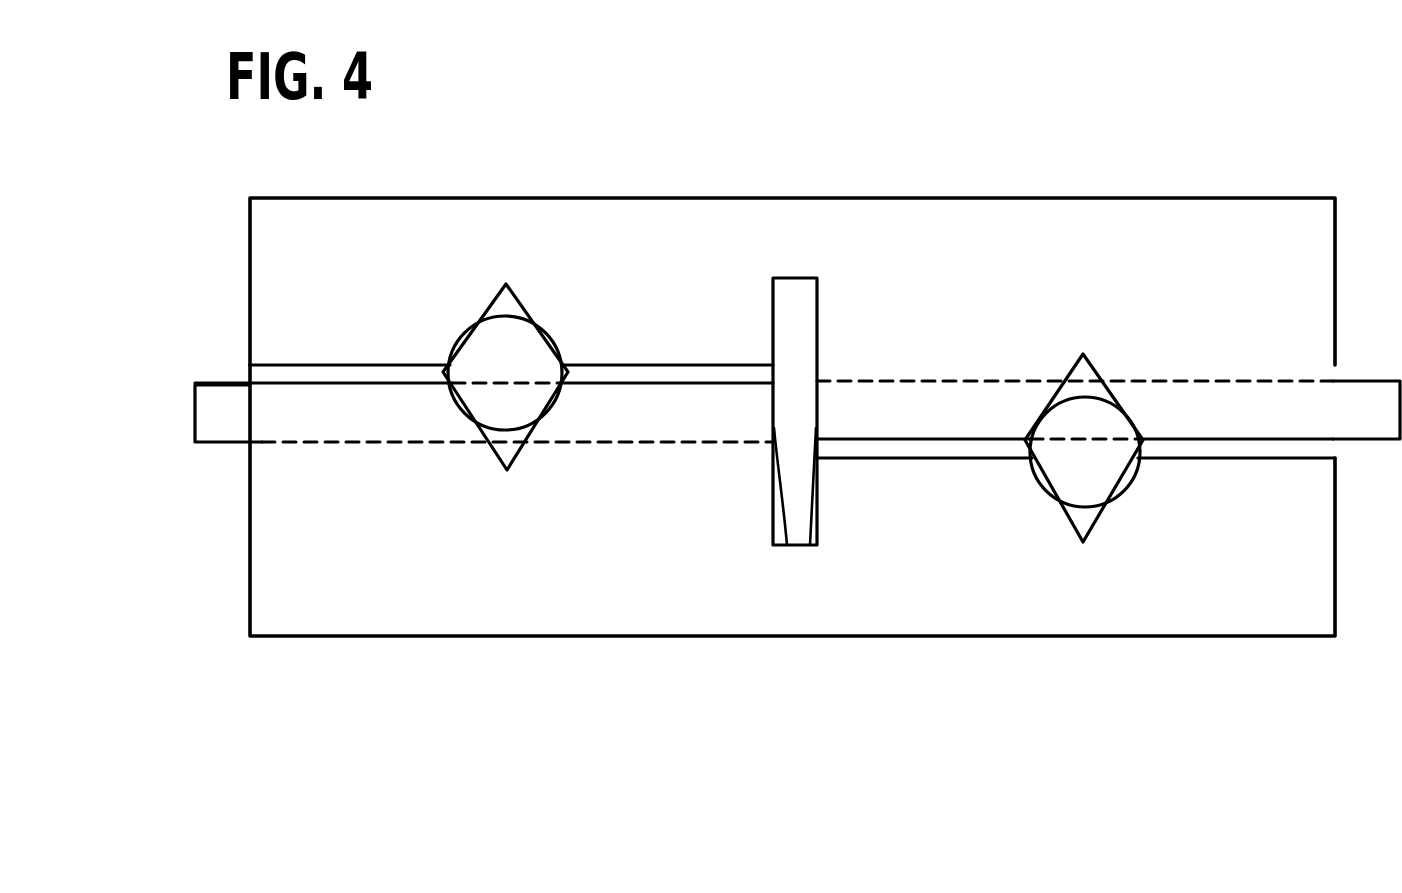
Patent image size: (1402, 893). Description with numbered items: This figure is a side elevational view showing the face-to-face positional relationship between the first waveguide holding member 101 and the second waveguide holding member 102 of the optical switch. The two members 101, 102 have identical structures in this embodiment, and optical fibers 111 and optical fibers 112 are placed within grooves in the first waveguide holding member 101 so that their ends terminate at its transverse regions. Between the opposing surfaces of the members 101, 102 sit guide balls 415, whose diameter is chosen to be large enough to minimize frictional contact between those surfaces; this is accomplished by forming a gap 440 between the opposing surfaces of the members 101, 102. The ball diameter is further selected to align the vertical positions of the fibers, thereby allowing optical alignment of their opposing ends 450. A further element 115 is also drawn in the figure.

The first waveguide holding member 101 is at (486, 660).
The second waveguide holding member 102 is at (236, 218).
The optical fibers 111 is at (221, 430).
The optical fibers 112 is at (1368, 443).
The second lens 115 is at (1097, 520).
The guide balls 415 is at (525, 355).
The gap 440 is at (260, 380).
The opposing ends 450 is at (812, 548).